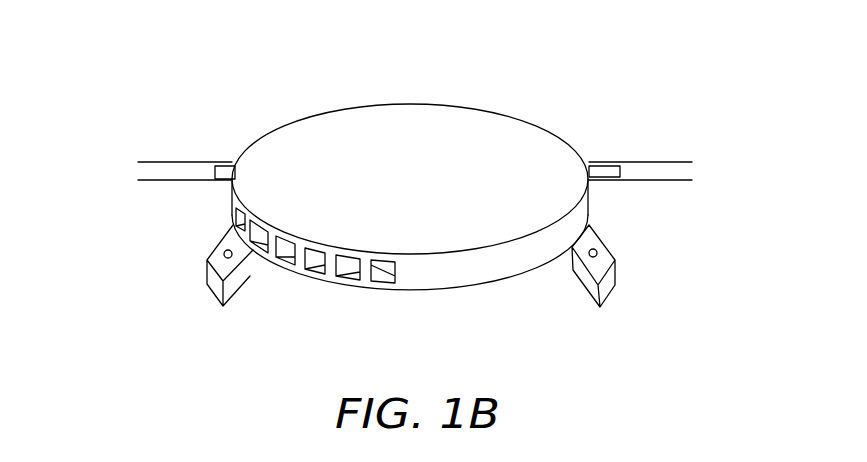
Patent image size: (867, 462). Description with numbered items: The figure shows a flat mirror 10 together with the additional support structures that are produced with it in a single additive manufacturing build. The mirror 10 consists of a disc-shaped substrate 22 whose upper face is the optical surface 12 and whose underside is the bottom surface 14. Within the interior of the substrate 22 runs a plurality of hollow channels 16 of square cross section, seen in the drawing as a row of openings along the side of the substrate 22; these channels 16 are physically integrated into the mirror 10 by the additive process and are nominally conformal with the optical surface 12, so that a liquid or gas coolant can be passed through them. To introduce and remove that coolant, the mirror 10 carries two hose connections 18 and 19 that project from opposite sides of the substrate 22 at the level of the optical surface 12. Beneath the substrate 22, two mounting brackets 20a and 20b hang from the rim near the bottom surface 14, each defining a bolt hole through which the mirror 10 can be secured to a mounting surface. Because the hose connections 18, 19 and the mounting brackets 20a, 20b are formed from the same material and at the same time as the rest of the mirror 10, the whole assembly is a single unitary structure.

The mirror 10 is at (239, 77).
The optical surface 12 is at (427, 185).
The bottom surface 14 is at (498, 282).
The hollow channels 16 is at (371, 266).
The hose connection 18 is at (220, 164).
The hose connection 19 is at (602, 162).
The mounting bracket 20a is at (227, 290).
The mounting bracket 20b is at (608, 290).
The substrate 22 is at (575, 218).